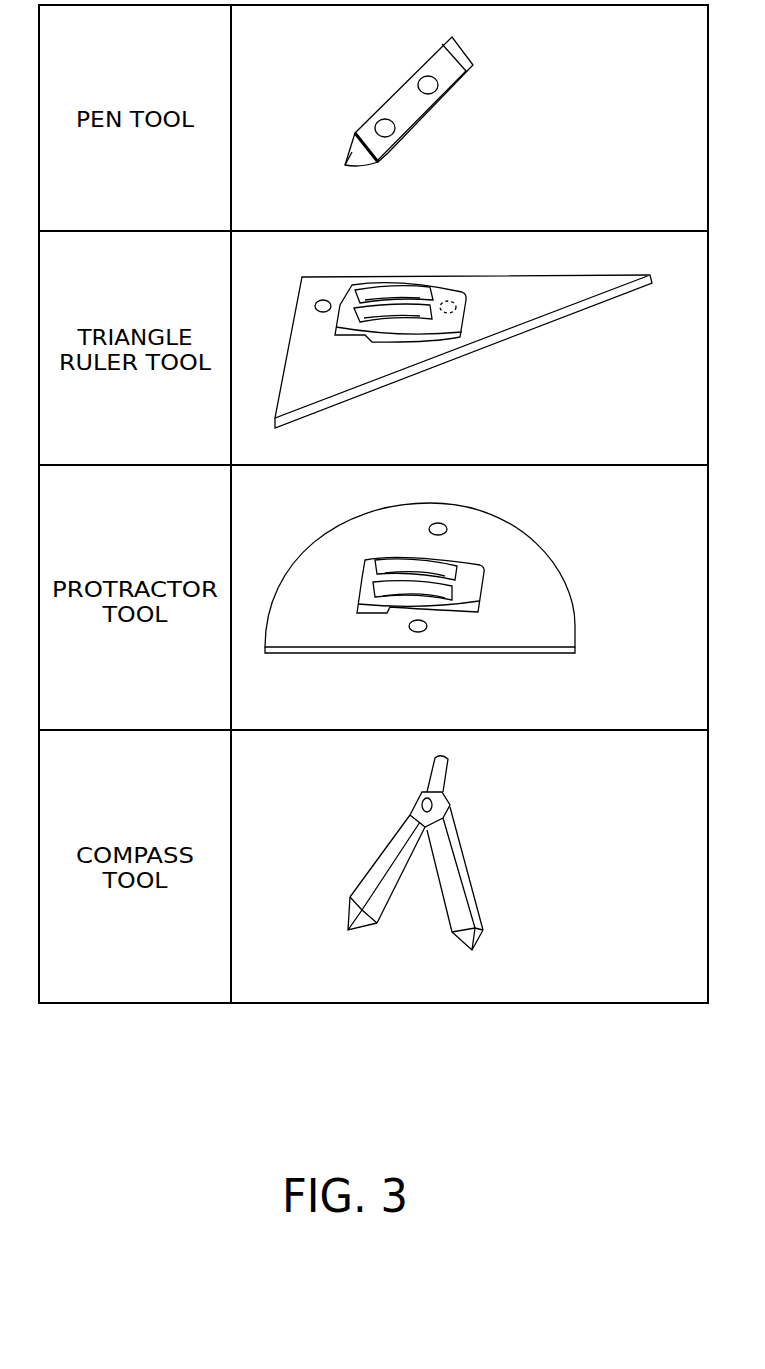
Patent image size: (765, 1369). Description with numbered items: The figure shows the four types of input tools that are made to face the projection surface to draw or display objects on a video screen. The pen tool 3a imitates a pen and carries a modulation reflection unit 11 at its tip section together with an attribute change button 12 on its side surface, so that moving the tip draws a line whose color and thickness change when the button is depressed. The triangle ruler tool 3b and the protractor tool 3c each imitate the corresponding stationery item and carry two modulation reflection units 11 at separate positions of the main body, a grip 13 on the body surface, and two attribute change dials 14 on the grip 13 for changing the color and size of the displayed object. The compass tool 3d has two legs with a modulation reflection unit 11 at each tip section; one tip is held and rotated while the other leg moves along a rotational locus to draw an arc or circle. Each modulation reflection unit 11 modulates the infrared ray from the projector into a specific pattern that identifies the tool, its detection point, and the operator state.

The pen tool 3a is at (503, 112).
The triangle ruler tool 3b is at (505, 365).
The protractor tool 3c is at (556, 528).
The compass tool 3d is at (508, 830).
The modulation reflection unit 11 is at (348, 168).
The attribute change button 12 is at (402, 143).
The grip 13 is at (348, 336).
The attribute change dial 14 is at (388, 284).